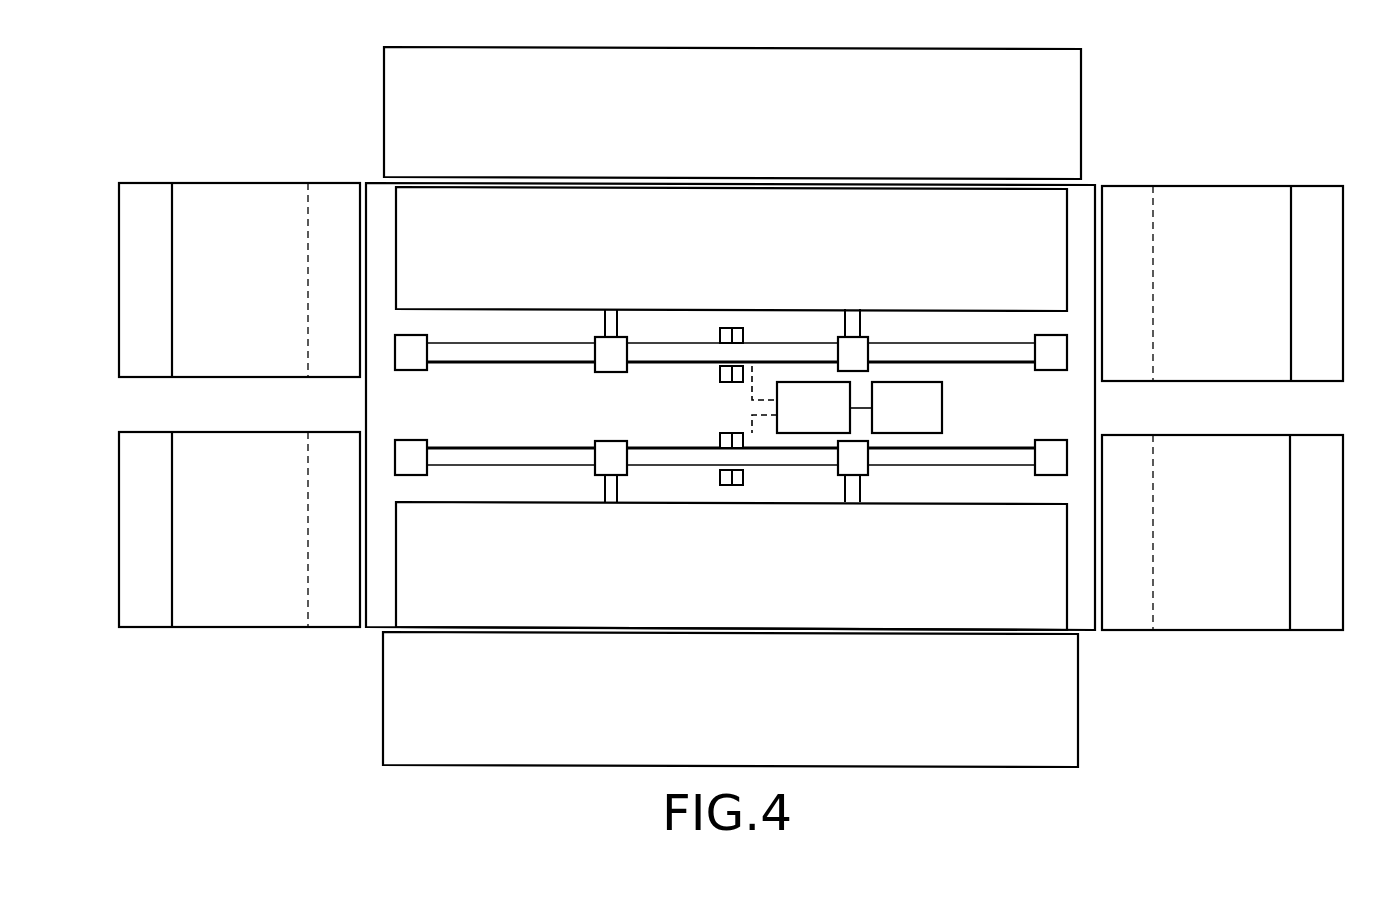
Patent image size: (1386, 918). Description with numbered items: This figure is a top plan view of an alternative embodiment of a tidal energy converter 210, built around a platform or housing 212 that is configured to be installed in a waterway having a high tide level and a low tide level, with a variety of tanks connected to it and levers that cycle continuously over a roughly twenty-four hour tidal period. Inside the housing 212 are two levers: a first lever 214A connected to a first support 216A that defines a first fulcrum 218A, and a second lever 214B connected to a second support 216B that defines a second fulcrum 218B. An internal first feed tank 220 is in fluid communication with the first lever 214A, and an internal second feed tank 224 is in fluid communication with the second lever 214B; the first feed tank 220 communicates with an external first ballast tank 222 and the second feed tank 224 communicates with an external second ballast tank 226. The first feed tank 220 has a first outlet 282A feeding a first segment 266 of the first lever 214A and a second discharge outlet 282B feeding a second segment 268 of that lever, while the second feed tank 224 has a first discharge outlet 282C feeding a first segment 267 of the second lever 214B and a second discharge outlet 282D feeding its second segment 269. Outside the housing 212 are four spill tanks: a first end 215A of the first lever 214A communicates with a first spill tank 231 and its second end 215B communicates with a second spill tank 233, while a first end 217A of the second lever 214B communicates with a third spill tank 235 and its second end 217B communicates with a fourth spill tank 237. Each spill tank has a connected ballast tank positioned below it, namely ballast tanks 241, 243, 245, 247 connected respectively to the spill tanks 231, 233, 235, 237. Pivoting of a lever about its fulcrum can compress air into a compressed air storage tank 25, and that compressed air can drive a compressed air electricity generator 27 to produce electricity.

The tidal energy converter 210 is at (1200, 90).
The platform or housing 212 is at (370, 240).
The first feed tank 220 is at (497, 231).
The first ballast tank 222 is at (756, 129).
The second feed tank 224 is at (496, 599).
The second ballast tank 226 is at (756, 709).
The first spill tank 231 is at (1226, 303).
The second spill tank 233 is at (286, 299).
The third spill tank 235 is at (1224, 544).
The fourth spill tank 237 is at (284, 541).
The ballast tank 241 is at (1315, 198).
The ballast tank 243 is at (148, 193).
The ballast tank 245 is at (1313, 620).
The ballast tank 247 is at (147, 617).
The first lever 214A is at (680, 342).
The second lever 214B is at (680, 470).
The first end of the first lever 215A is at (1052, 368).
The second end of the first lever 215B is at (410, 368).
The first end of the second lever 217A is at (1052, 447).
The second end of the second lever 217B is at (410, 447).
The first support 216A is at (723, 327).
The second support 216B is at (722, 487).
The first fulcrum 218A is at (733, 327).
The second fulcrum 218B is at (733, 487).
The first segment of the first lever 266 is at (953, 353).
The first segment of the second lever 267 is at (953, 463).
The second segment of the first lever 268 is at (508, 347).
The second segment of the second lever 269 is at (508, 463).
The first outlet 282A is at (857, 325).
The second discharge outlet 282B is at (606, 325).
The first discharge outlet 282C is at (857, 490).
The second discharge outlet 282D is at (606, 492).
The compressed air storage tank 25 is at (829, 421).
The compressed air electricity generator 27 is at (922, 421).